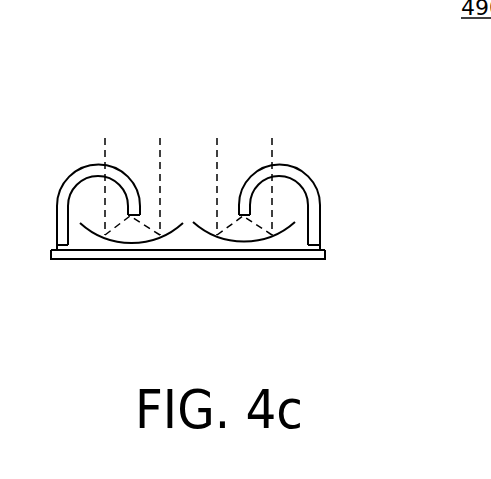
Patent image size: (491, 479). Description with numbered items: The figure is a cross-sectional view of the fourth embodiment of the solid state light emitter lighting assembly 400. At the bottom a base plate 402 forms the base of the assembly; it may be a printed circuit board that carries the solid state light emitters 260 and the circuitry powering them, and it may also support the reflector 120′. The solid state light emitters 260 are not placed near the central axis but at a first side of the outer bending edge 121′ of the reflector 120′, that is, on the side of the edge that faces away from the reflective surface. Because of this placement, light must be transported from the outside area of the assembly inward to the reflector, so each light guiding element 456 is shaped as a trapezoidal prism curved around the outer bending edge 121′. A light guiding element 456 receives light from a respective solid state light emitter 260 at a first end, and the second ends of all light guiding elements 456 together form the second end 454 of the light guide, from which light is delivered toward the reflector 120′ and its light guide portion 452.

The solid state light emitter lighting assembly 400 is at (110, 64).
The base plate 402 is at (73, 253).
The reflector 120′ is at (137, 245).
The outer bending edge 121′ is at (90, 228).
The light guiding element 456 is at (287, 167).
The light guide leg 452 is at (320, 217).
The second end of the light guide 454 is at (245, 216).
The solid state light emitters 260 is at (325, 248).